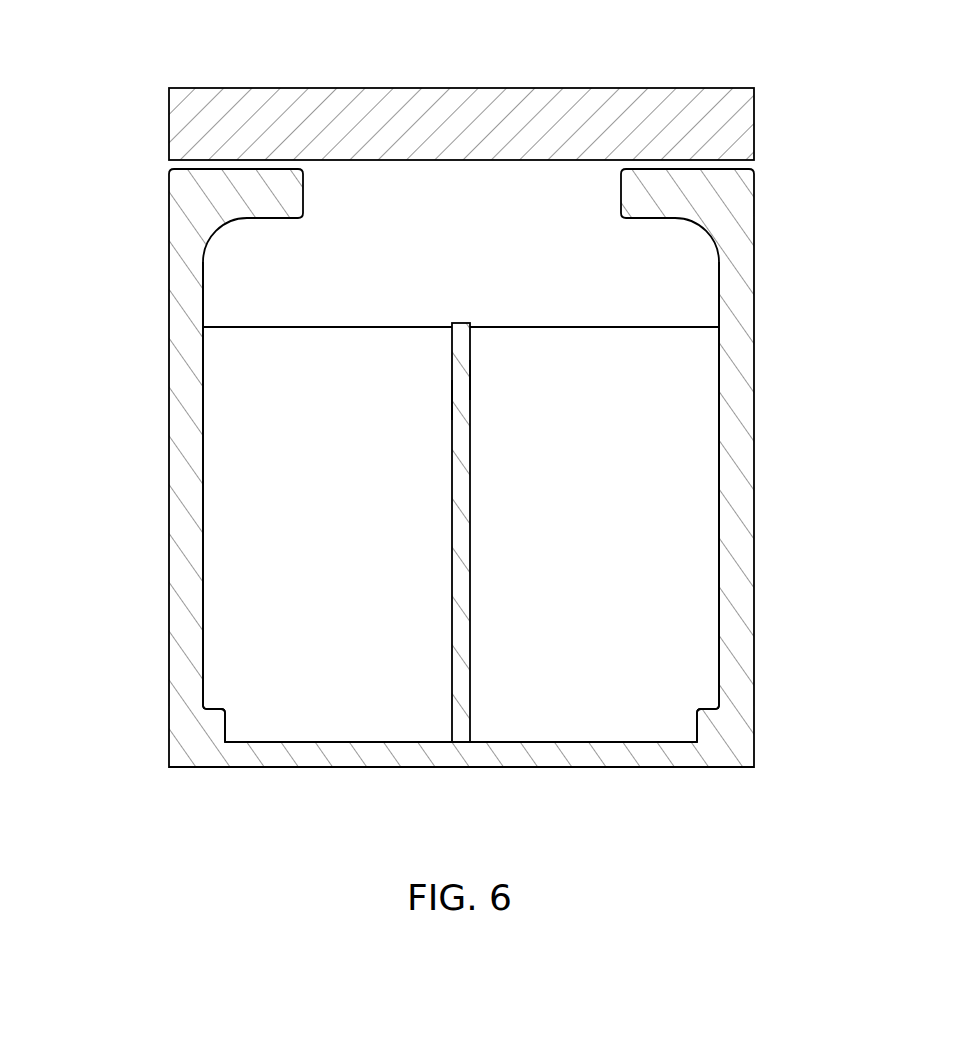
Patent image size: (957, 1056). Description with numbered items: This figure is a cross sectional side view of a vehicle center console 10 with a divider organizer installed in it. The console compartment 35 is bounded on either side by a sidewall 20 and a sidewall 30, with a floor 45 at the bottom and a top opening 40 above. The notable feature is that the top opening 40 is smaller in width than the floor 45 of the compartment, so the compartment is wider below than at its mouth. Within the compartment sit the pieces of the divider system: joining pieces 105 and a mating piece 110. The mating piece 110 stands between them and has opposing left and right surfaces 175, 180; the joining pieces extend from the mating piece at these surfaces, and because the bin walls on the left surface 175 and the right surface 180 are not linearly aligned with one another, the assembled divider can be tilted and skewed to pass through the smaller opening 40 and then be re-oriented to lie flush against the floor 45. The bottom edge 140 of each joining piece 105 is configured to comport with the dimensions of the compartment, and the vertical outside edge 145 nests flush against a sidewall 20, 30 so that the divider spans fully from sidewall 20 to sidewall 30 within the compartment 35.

The vehicle center console 10 is at (730, 203).
The sidewall 20 is at (185, 421).
The sidewall 30 is at (732, 538).
The console compartment 35 is at (468, 269).
The top opening 40 is at (413, 197).
The floor 45 is at (582, 742).
The joining piece 105 is at (363, 476).
The mating piece 110 is at (452, 497).
The bottom edge 140 is at (380, 742).
The outside edge 145 is at (203, 633).
The left surface 175 is at (452, 394).
The right surface 180 is at (470, 378).